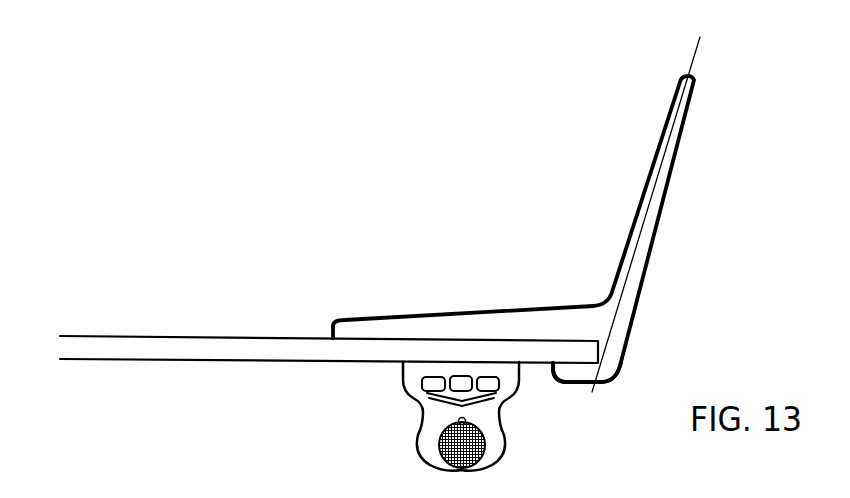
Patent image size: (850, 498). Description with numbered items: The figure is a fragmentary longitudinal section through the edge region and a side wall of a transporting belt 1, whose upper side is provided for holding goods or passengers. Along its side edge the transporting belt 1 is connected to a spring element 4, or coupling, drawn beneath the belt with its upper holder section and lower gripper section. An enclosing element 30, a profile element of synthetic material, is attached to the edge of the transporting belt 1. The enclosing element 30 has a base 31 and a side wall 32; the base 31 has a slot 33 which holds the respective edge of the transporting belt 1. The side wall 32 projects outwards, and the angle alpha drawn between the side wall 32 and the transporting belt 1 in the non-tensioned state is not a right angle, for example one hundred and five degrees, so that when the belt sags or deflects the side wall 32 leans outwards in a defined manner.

The transporting belt 1 is at (203, 343).
The spring element 4 is at (405, 425).
The enclosing element 30 is at (598, 207).
The base 31 is at (612, 350).
The side wall 32 is at (661, 174).
The slot 33 is at (578, 366).